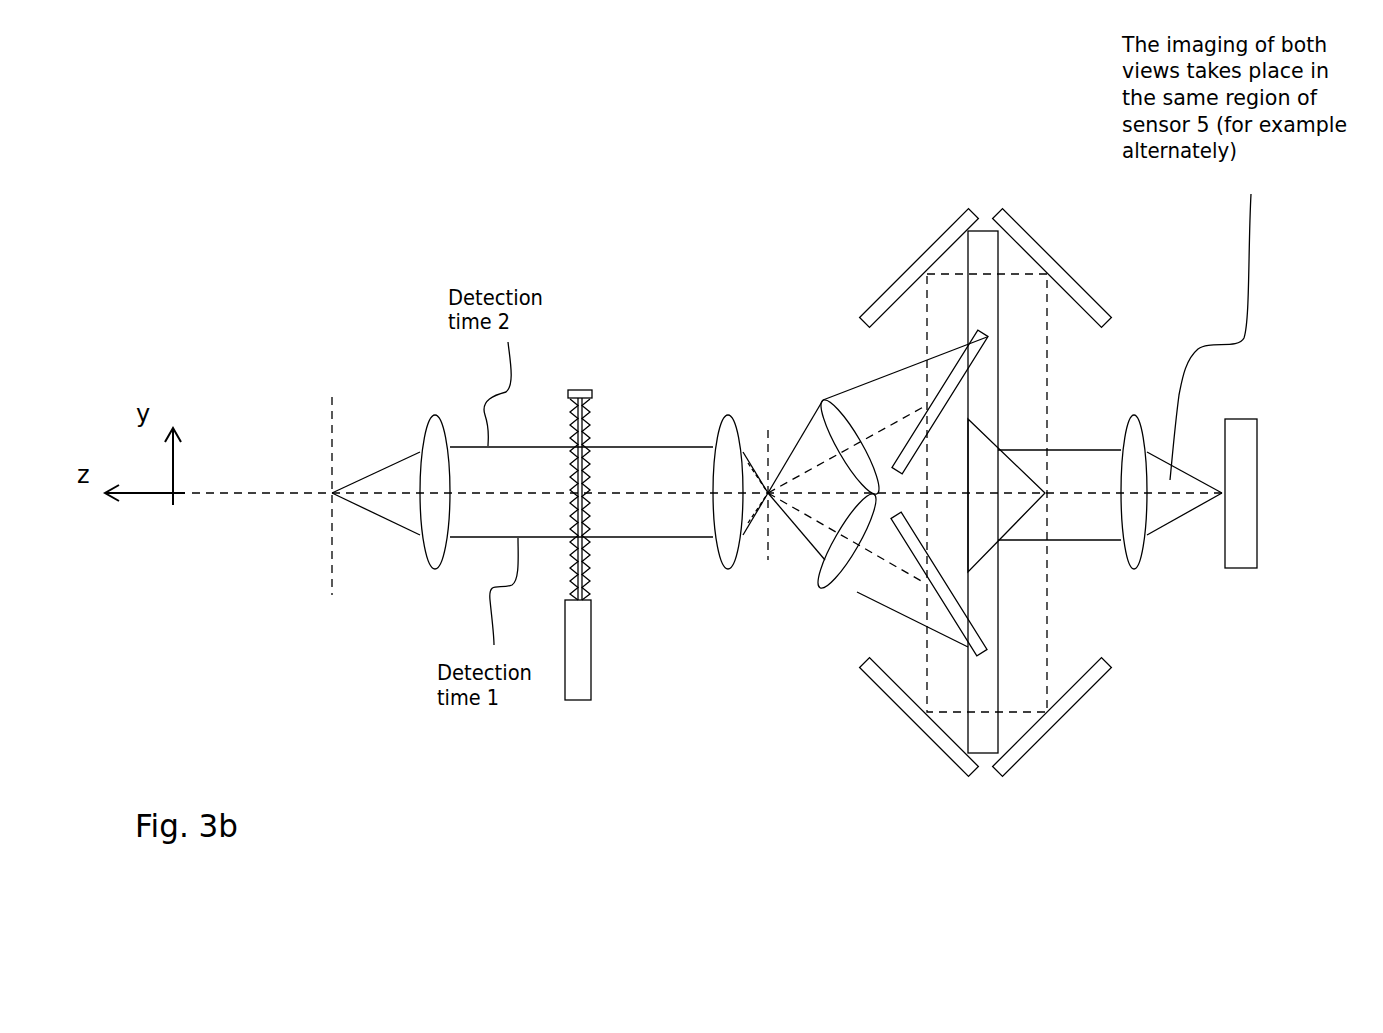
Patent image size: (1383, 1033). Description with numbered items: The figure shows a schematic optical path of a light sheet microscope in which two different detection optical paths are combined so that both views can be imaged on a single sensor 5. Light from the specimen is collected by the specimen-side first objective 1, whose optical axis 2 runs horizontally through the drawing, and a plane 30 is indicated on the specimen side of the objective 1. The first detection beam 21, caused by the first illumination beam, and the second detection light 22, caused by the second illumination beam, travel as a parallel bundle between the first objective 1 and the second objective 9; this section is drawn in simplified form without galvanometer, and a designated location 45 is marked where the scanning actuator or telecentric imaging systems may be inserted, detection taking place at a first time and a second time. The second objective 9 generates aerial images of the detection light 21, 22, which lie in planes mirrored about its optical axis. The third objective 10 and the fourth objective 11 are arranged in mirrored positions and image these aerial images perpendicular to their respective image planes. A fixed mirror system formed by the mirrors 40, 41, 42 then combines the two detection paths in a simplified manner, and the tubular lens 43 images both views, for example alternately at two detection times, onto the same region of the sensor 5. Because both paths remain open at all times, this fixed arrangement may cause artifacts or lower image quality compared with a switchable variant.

The specimen-side first objective 1 is at (427, 427).
The optical axis 2 is at (246, 495).
The object plane 30 is at (330, 570).
The second detection light 22 is at (618, 446).
The first detection beam 21 is at (649, 538).
The designated location 45 is at (580, 604).
The second objective 9 is at (730, 417).
The third objective 10 is at (818, 582).
The fourth objective 11 is at (822, 400).
The mirror 40 is at (903, 438).
The mirror 41 is at (920, 252).
The mirror 42 is at (1017, 465).
The tubular lens 43 is at (1141, 563).
The sensor 5 is at (1257, 460).